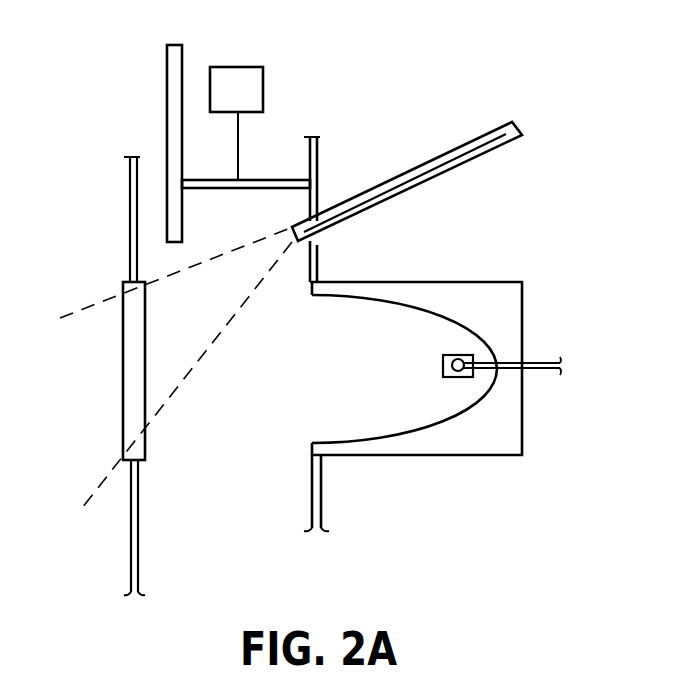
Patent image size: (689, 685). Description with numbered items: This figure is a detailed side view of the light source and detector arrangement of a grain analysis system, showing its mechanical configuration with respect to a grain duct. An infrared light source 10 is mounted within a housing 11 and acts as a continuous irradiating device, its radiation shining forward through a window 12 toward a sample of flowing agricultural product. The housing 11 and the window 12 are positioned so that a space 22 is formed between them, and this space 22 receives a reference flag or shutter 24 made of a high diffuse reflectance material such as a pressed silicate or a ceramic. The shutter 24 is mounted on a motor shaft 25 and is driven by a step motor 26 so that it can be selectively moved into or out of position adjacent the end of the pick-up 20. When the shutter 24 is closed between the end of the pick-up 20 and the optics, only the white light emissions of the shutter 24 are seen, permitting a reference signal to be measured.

The infrared light source 10 is at (387, 305).
The housing 11 is at (452, 280).
The window 12 is at (131, 402).
The pick-up 20 is at (437, 155).
The space 22 is at (200, 324).
The reference shutter 24 is at (178, 62).
The motor shaft 25 is at (242, 180).
The step motor 26 is at (265, 80).